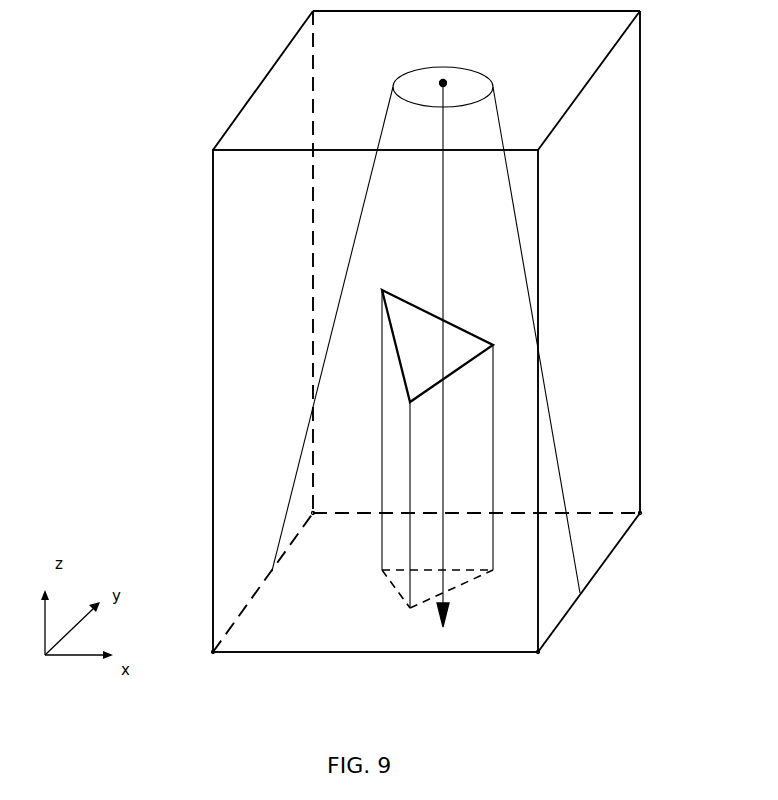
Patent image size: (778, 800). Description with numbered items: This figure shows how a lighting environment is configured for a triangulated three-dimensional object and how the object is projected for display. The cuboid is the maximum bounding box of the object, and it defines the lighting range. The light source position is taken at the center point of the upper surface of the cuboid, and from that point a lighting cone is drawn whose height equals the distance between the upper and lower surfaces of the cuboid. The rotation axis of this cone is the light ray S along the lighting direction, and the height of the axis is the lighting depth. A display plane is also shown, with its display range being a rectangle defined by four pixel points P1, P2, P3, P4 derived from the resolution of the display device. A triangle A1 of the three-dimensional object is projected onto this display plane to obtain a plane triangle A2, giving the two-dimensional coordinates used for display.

The light ray S is at (459, 269).
The triangle of the 3D object A1 is at (437, 346).
The plane triangle A2 is at (437, 449).
The pixel point P1 is at (206, 665).
The pixel point P2 is at (541, 666).
The pixel point P3 is at (654, 516).
The pixel point P4 is at (303, 517).